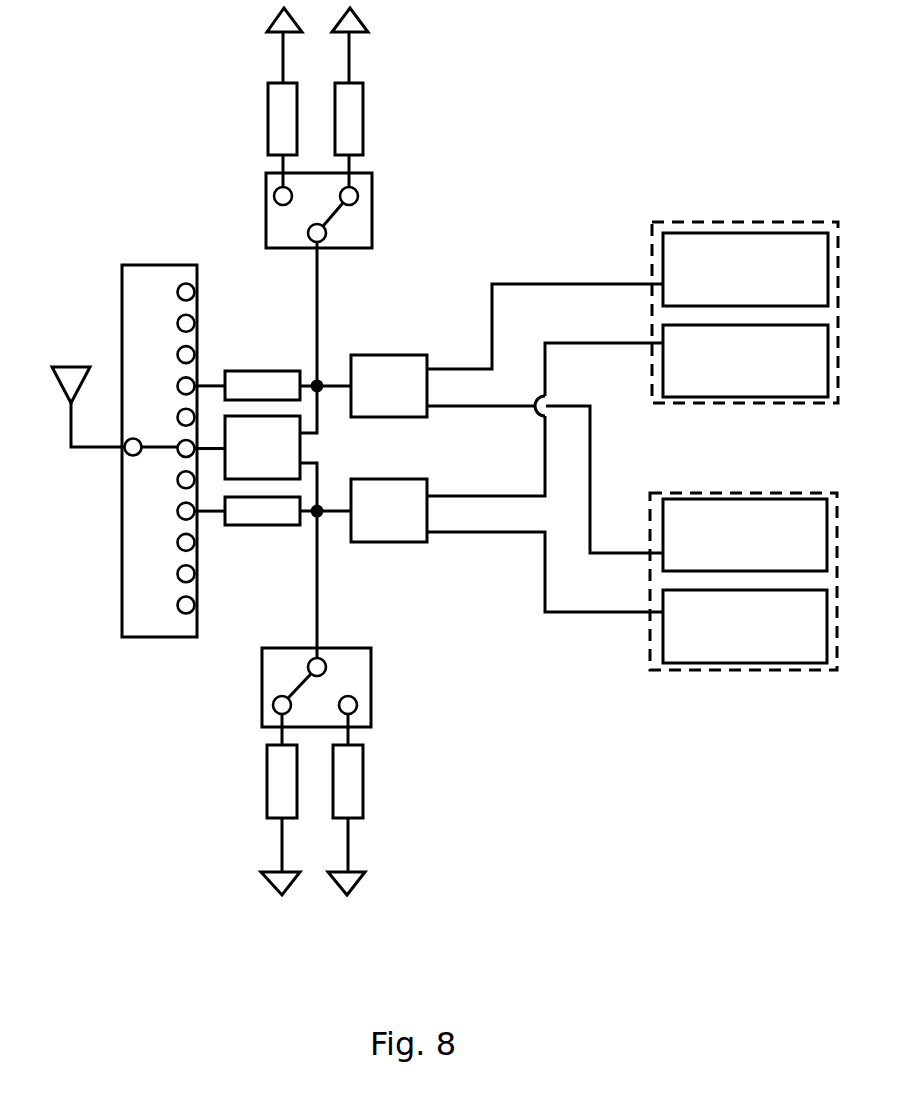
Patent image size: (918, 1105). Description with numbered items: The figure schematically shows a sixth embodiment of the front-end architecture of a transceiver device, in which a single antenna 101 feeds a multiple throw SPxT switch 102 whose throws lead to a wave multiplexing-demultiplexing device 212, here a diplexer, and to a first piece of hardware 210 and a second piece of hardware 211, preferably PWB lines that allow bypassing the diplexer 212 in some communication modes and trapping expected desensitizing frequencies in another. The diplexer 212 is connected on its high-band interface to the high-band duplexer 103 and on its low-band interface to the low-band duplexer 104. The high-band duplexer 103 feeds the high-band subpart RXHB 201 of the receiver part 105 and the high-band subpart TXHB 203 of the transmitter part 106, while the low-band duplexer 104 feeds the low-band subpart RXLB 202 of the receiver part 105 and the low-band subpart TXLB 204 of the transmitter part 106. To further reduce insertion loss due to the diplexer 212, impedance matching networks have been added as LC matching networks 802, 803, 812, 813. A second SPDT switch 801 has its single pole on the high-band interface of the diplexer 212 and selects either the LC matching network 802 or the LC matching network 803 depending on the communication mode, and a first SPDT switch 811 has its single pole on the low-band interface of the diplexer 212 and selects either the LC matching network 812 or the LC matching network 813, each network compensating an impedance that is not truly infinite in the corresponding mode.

The antenna 101 is at (62, 367).
The SPxT switch 102 is at (143, 265).
The high-band duplexer 103 is at (383, 355).
The low-band duplexer 104 is at (385, 542).
The receiver part 105 is at (678, 222).
The transmitter part 106 is at (650, 493).
The high-band subpart RXHB 201 is at (762, 233).
The low-band subpart RXLB 202 is at (720, 397).
The high-band subpart TXHB 203 is at (806, 493).
The low-band subpart TXLB 204 is at (740, 670).
The first piece of hardware 210 is at (253, 525).
The second piece of hardware 211 is at (268, 371).
The wave multiplexing-demultiplexing device 212 is at (256, 448).
The second SPDT switch 801 is at (372, 195).
The LC matching network 802 is at (268, 100).
The LC matching network 803 is at (363, 100).
The first SPDT switch 811 is at (371, 678).
The LC matching network 812 is at (363, 790).
The LC matching network 813 is at (267, 790).